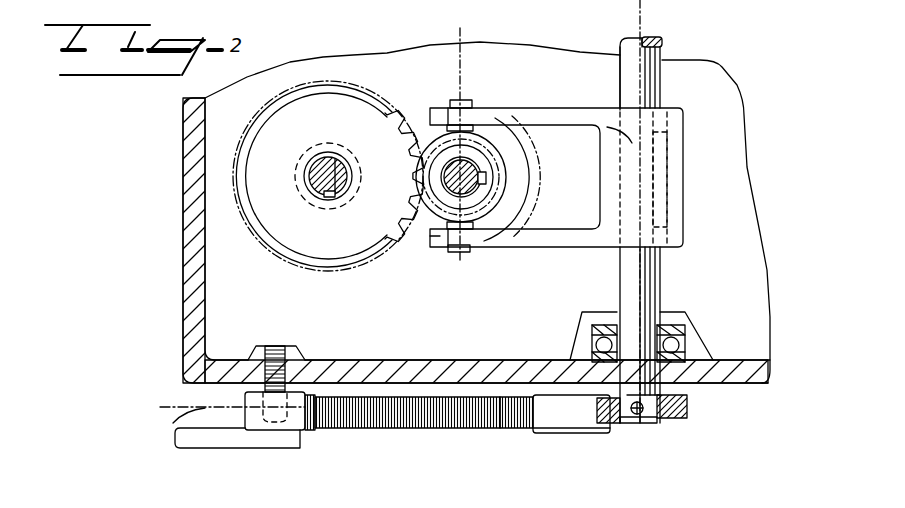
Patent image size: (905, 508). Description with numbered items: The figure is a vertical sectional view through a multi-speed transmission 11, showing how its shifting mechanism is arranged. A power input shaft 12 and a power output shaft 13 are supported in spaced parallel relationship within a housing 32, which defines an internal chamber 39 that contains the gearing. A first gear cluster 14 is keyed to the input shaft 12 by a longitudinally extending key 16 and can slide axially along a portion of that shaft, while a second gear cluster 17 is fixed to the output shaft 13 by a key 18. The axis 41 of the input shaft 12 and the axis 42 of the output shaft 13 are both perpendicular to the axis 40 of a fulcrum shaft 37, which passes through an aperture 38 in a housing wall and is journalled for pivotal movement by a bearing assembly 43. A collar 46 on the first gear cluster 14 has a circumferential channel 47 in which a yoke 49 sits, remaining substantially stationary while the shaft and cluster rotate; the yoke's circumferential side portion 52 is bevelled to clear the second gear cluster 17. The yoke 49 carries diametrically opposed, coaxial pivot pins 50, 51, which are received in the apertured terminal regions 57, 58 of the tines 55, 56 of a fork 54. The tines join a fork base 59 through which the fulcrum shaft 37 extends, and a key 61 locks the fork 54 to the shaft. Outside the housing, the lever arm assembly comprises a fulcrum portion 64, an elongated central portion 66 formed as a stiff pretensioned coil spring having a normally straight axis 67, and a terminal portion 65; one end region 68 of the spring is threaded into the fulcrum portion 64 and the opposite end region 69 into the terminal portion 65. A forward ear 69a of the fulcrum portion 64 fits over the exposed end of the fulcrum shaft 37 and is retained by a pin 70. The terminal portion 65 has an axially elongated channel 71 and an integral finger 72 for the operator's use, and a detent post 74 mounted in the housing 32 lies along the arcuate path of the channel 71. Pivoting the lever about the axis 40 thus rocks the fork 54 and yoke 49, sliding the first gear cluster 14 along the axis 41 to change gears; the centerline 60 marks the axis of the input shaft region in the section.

The multi-speed transmission 11 is at (752, 47).
The power input shaft 12 is at (408, 236).
The power output shaft 13 is at (306, 183).
The first gear cluster 14 is at (522, 218).
The key 16 is at (480, 170).
The second gear cluster 17 is at (308, 267).
The key 18 is at (327, 208).
The housing 32 is at (190, 263).
The fulcrum shaft 37 is at (648, 263).
The aperture 38 is at (613, 320).
The chamber 39 is at (405, 333).
The axis 40 is at (642, 24).
The axis 41 is at (420, 160).
The axis 42 is at (333, 155).
The bearing assembly 43 is at (675, 347).
The collar 46 is at (477, 153).
The channel 47 is at (490, 185).
The yoke 49 is at (498, 194).
The pivot pin 50 is at (458, 104).
The pivot pin 51 is at (466, 250).
The circumferential side portion 52 is at (420, 200).
The fork 54 is at (562, 78).
The tine 55 is at (565, 114).
The tine 56 is at (525, 244).
The terminal region 57 is at (438, 106).
The terminal region 58 is at (445, 235).
The fork base 59 is at (633, 128).
The axis 60 is at (458, 35).
The key 61 is at (663, 178).
The fulcrum portion 64 is at (572, 428).
The terminal portion 65 is at (262, 422).
The elongated central portion 66 is at (405, 430).
The axis 67 is at (172, 424).
The end region 68 is at (512, 430).
The end region 69 is at (310, 430).
The forward ear 69a is at (676, 420).
The pin 70 is at (637, 420).
The channel 71 is at (280, 422).
The finger 72 is at (208, 440).
The post 74 is at (262, 385).